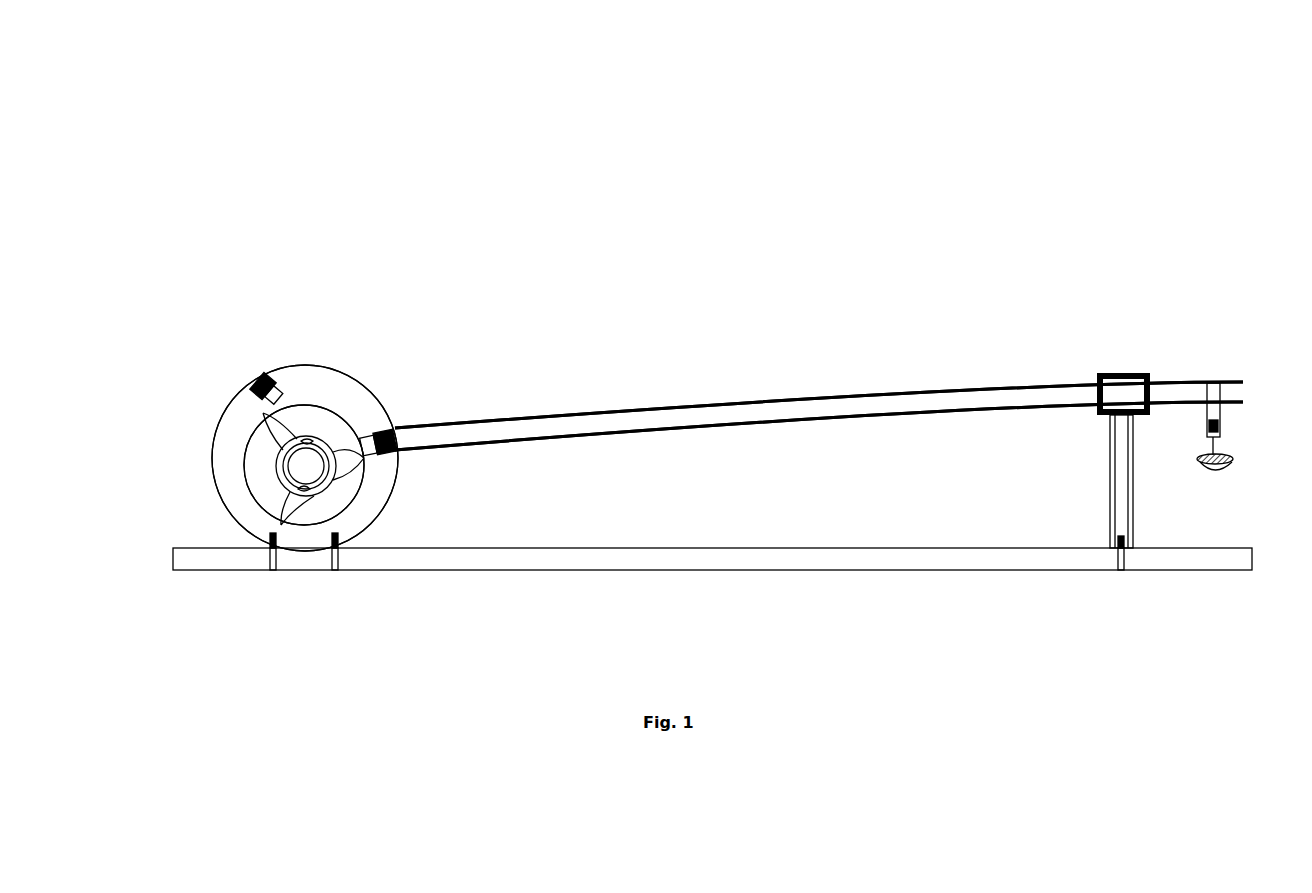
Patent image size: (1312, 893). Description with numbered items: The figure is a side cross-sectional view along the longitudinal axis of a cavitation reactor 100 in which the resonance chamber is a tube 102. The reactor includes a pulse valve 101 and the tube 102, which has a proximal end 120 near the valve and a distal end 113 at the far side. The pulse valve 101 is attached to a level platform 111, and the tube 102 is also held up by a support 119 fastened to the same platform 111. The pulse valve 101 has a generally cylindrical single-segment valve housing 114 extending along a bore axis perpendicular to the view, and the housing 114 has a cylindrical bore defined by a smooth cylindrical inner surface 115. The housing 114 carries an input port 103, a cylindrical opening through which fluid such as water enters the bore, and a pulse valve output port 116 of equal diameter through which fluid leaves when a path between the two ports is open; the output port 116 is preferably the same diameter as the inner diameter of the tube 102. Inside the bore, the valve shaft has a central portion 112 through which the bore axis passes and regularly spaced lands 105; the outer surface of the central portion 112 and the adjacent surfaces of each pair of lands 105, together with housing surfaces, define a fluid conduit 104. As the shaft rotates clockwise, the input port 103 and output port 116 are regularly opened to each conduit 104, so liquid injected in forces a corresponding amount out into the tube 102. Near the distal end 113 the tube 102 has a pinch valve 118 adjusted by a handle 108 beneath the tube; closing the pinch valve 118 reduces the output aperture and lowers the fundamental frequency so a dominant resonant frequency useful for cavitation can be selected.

The cavitation reactor 100 is at (354, 146).
The pulse valve 101 is at (211, 391).
The tube 102 is at (705, 403).
The input port 103 is at (262, 383).
The fluid conduit 104 is at (273, 497).
The lands 105 is at (268, 420).
The handle 108 is at (1223, 462).
The platform 111 is at (593, 567).
The central portion 112 is at (282, 468).
The distal end 113 is at (1243, 382).
The valve housing 114 is at (337, 392).
The inner surface 115 is at (301, 405).
The pulse valve output port 116 is at (386, 432).
The pinch valve 118 is at (1210, 383).
The support 119 is at (1112, 450).
The proximal end 120 is at (392, 432).